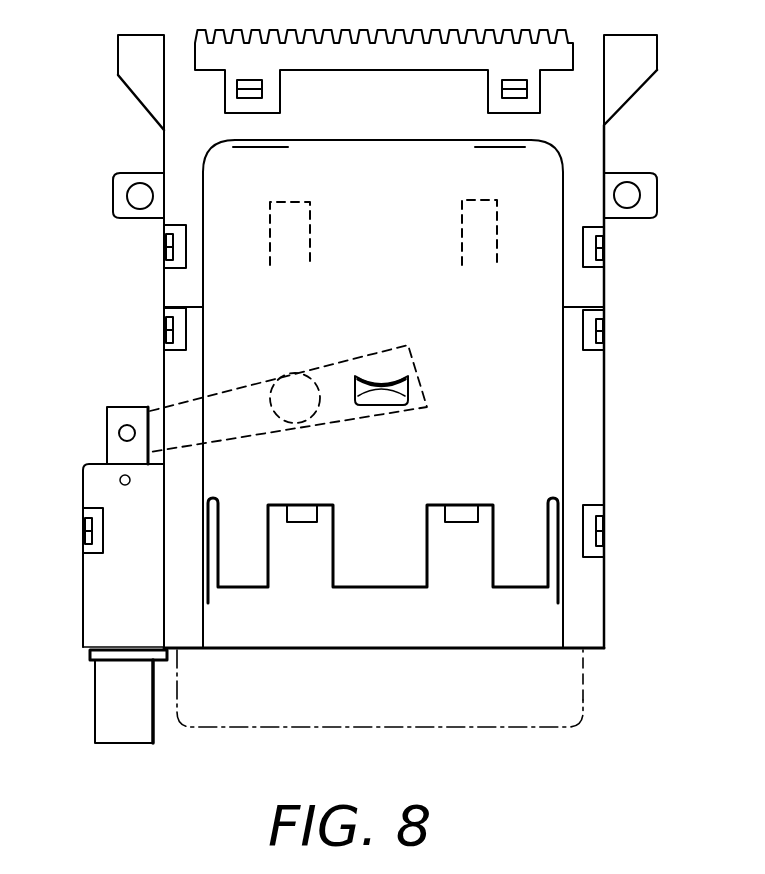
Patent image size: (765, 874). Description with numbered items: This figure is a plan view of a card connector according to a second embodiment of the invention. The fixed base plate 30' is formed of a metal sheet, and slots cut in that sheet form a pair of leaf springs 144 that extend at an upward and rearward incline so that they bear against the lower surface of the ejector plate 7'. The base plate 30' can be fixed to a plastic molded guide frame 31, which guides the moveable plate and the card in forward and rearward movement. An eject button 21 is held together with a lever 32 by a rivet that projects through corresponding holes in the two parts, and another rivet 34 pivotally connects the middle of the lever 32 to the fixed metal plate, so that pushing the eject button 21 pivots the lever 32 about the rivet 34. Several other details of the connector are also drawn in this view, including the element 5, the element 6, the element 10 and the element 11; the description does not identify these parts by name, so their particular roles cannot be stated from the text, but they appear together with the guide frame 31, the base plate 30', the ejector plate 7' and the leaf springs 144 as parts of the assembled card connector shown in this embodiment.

The bottom wall of housing 5 is at (583, 683).
The ground contact block 6 is at (105, 593).
The ejector plate 7' is at (442, 387).
The latch member 10 is at (400, 383).
The latch spring portion 11 is at (375, 407).
The eject button 21 is at (133, 730).
The fixed base plate 30' is at (404, 709).
The guide frame 31 is at (583, 397).
The lever 32 is at (238, 407).
The rivet 34 is at (320, 402).
The leaf springs 144 is at (462, 228).